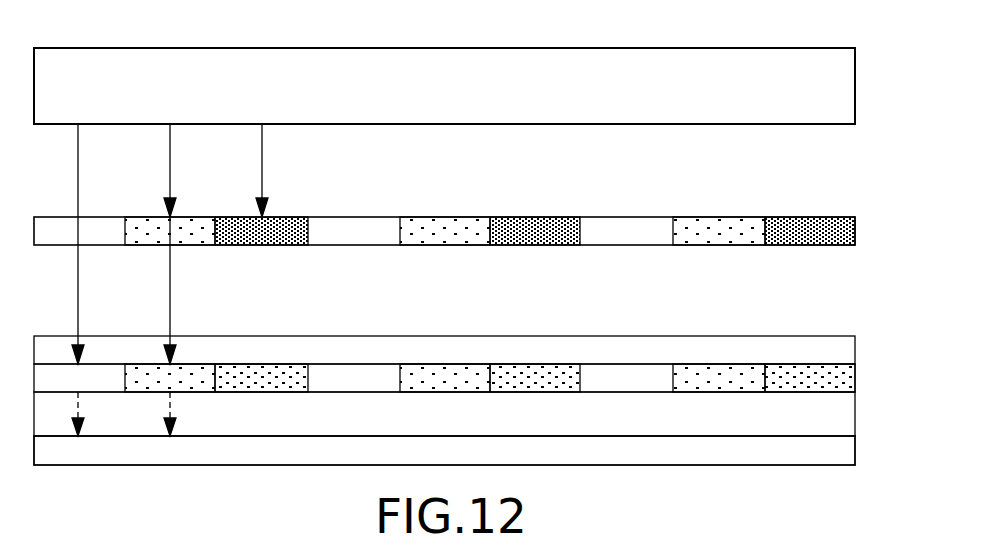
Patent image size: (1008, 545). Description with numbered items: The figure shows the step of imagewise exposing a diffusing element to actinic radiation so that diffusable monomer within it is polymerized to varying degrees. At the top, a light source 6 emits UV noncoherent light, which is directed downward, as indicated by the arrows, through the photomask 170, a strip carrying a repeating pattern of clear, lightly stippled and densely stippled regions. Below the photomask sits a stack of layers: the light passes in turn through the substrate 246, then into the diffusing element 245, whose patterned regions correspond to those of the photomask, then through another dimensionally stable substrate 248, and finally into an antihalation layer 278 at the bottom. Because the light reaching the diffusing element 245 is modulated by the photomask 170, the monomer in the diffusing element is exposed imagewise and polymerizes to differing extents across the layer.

The light source 6 is at (792, 49).
The photomask 170 is at (812, 195).
The substrate 246 is at (855, 350).
The diffusing element 245 is at (855, 380).
The dimensionally stable substrate 248 is at (855, 418).
The antihalation layer 278 is at (855, 455).